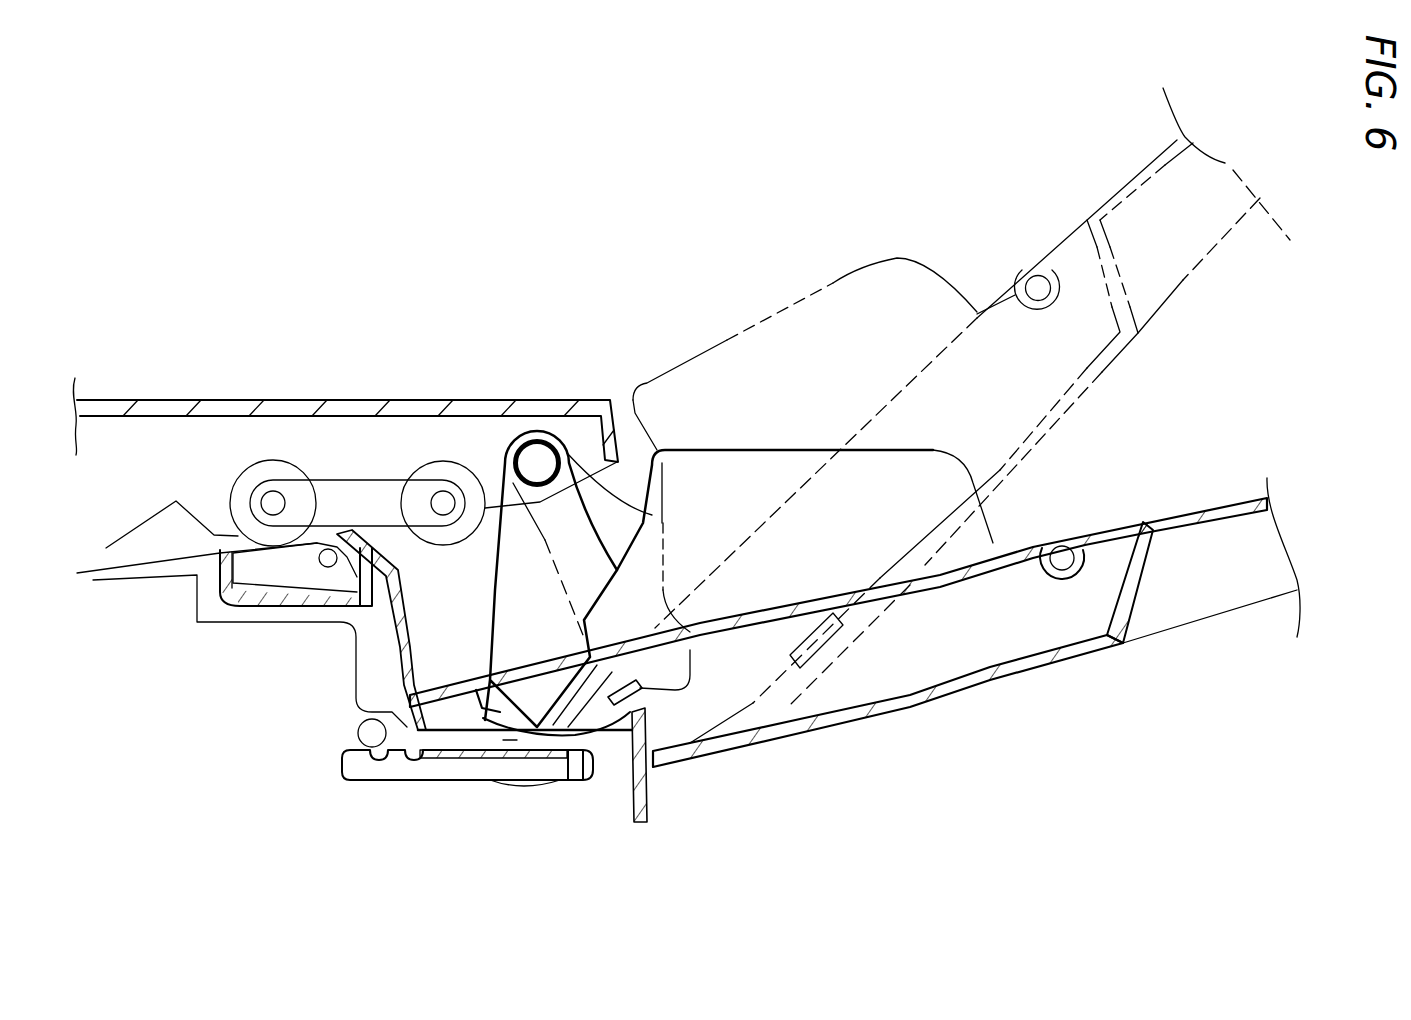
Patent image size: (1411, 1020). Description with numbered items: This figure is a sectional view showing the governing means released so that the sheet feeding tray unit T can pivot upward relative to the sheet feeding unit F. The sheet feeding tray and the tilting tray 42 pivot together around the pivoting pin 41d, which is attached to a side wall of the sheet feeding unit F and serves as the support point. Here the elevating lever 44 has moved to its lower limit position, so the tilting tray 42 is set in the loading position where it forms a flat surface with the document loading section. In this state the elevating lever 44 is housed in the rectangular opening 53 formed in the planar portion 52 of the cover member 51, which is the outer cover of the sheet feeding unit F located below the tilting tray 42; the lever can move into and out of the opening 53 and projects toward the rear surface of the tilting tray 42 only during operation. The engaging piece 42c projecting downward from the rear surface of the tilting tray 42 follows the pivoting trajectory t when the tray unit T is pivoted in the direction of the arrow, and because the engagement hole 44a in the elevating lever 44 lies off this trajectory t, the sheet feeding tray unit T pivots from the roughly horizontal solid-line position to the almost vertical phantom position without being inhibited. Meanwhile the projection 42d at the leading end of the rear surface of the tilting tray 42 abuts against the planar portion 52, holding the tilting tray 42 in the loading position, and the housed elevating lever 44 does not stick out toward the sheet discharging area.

The sheet feeding unit F is at (233, 381).
The sheet feeding tray unit T is at (1213, 427).
The pivoting pin 41d is at (536, 460).
The tilting tray 42 is at (1033, 532).
The engaging piece 42c is at (358, 729).
The projection 42d is at (483, 675).
The elevating lever 44 is at (383, 793).
The engagement hole 44a is at (470, 753).
The pivoting trajectory t is at (510, 732).
The cover member 51 is at (647, 792).
The planar portion 52 is at (643, 723).
The opening 53 is at (574, 740).